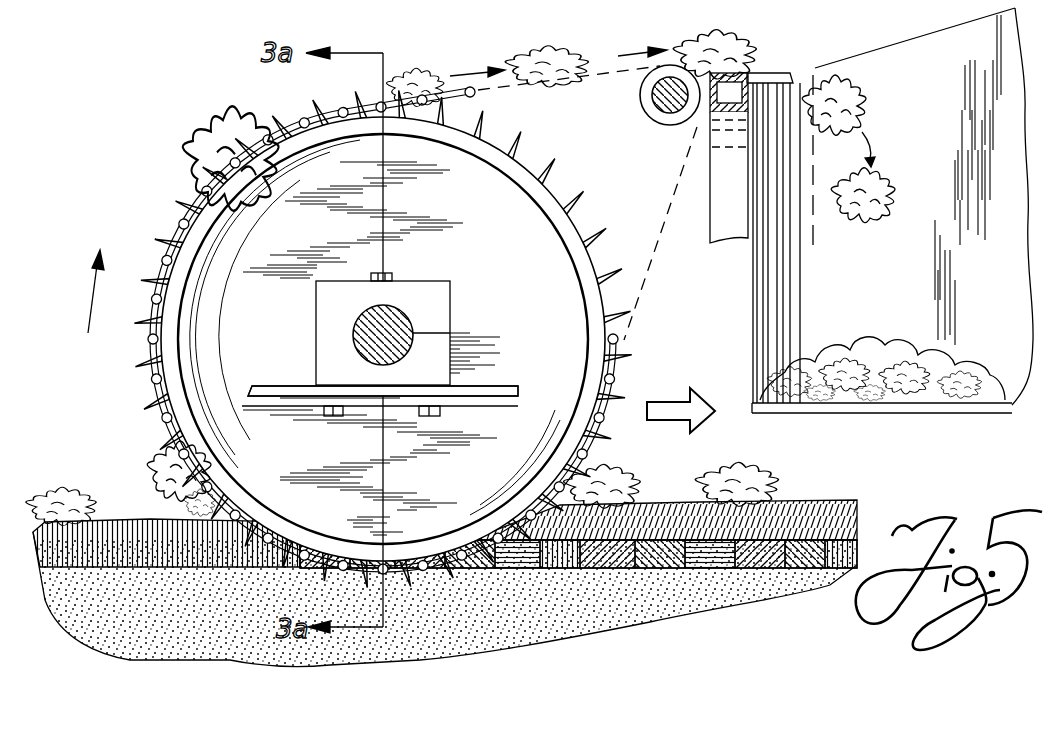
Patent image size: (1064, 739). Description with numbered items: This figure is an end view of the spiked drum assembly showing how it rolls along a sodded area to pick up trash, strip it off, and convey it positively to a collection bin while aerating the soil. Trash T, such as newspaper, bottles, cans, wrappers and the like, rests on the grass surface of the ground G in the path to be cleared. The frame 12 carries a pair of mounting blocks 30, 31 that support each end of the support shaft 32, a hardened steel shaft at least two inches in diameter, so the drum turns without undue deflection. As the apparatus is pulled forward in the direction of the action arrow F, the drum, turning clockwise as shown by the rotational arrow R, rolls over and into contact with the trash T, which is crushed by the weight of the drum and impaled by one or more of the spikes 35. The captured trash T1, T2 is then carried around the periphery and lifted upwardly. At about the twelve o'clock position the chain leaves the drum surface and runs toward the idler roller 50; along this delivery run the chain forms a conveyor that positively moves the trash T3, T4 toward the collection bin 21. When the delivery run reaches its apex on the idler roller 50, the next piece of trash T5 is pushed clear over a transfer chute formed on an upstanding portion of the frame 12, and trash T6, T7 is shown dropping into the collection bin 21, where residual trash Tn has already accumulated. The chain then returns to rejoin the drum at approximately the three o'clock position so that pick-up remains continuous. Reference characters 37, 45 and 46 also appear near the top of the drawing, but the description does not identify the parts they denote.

The frame 12 is at (276, 396).
The collection bin 21 is at (975, 202).
The mounting block 30 is at (440, 368).
The mounting block 31 is at (440, 313).
The support shaft 32 is at (353, 331).
The spikes 35 is at (150, 358).
The chain sprocket 37 is at (362, 6).
The chain 45 is at (422, 287).
The chain drive 46 is at (602, 6).
The idler roller 50 is at (650, 115).
The trash T1 is at (160, 464).
The trash T2 is at (222, 126).
The trash T3 is at (398, 80).
The trash T4 is at (553, 50).
The trash T5 is at (722, 32).
The trash T6 is at (858, 90).
The trash T7 is at (884, 213).
The residual trash Tn is at (936, 354).
The trash T is at (632, 484).
The rotational arrow R is at (88, 300).
The action arrow F is at (672, 408).
The ground G is at (855, 515).